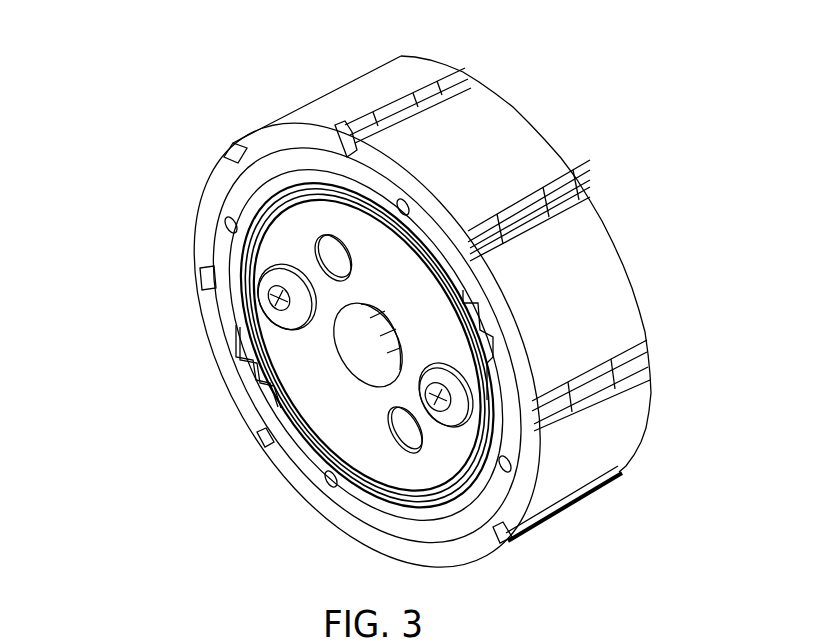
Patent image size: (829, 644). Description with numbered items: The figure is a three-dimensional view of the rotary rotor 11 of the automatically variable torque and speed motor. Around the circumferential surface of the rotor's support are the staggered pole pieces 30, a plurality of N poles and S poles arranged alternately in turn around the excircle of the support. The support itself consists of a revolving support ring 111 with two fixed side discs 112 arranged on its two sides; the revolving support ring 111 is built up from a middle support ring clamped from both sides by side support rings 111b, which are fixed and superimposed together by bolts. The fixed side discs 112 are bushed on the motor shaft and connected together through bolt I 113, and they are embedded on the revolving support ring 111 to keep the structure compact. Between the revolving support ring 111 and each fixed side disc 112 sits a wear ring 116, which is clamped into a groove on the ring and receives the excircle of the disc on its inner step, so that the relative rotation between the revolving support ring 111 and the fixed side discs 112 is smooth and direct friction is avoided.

The rotary rotor 11 is at (192, 90).
The staggered pole piece 30 is at (472, 155).
The revolving support ring 111 is at (205, 293).
The side support ring 111b is at (303, 453).
The fixed side disc 112 is at (330, 395).
The bolt I 113 is at (240, 262).
The wear ring 116 is at (257, 353).